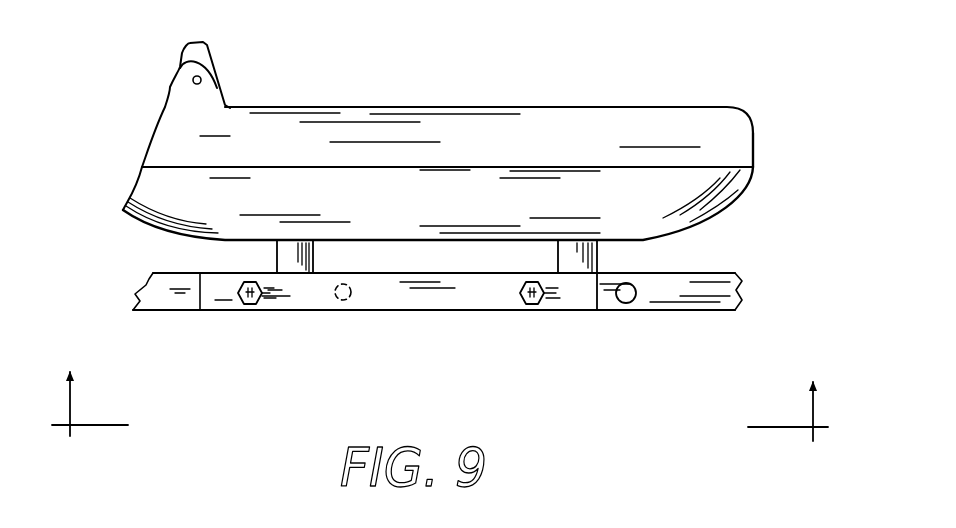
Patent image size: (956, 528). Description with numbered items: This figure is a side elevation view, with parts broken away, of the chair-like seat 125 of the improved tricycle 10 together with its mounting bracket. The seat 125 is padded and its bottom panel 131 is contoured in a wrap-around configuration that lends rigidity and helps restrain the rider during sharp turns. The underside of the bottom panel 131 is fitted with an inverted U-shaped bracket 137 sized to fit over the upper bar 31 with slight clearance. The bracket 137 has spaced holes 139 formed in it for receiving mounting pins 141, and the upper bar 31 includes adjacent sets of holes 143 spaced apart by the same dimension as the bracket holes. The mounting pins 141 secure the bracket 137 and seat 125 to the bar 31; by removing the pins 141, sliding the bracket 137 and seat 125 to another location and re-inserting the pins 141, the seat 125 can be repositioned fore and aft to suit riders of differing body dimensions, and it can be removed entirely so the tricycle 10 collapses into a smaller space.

The seat 125 is at (688, 83).
The bottom panel 131 is at (755, 147).
The upper bar 31 is at (727, 262).
The inverted U-shaped bracket 137 is at (222, 300).
The mounting pins 141 is at (250, 304).
The spaced holes 139 is at (270, 297).
The sets of holes 143 is at (348, 301).
The tricycle 10 is at (442, 382).